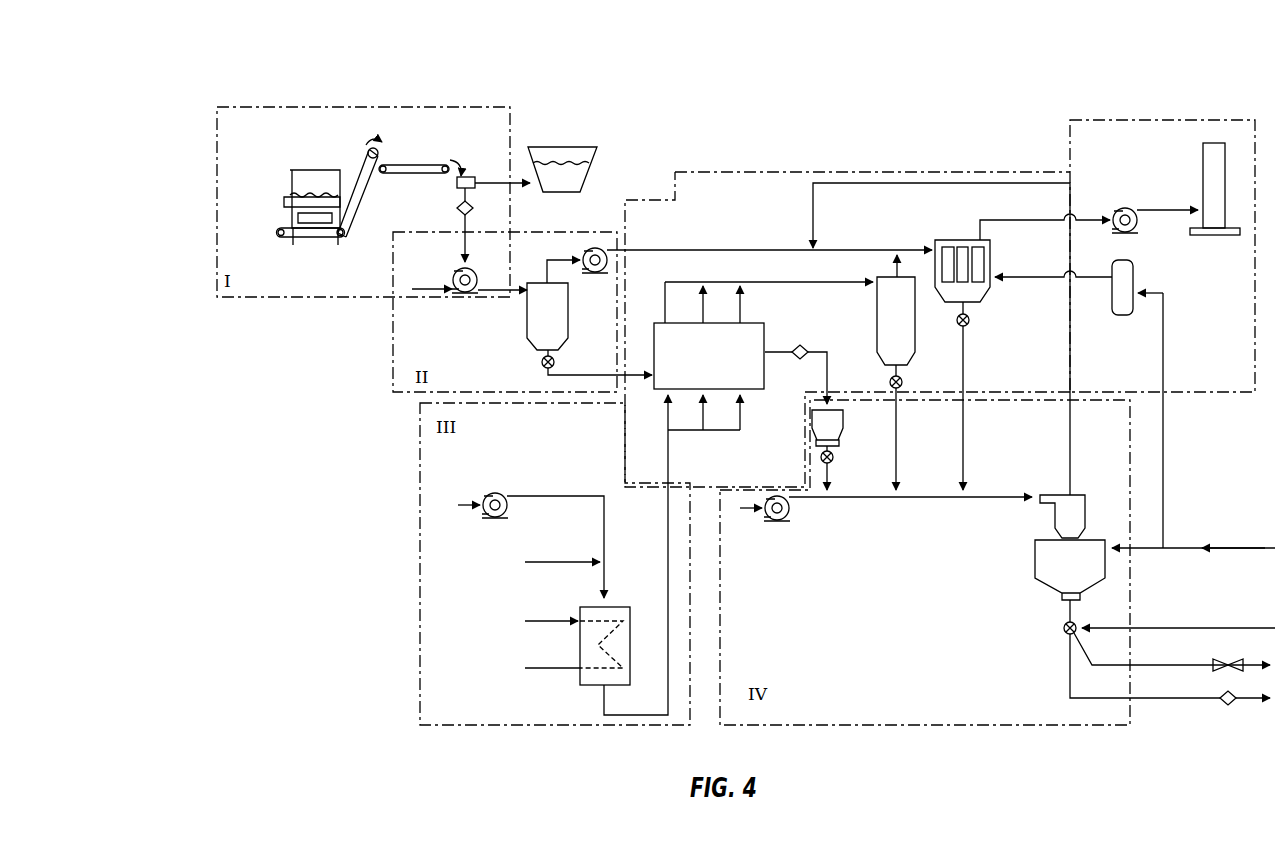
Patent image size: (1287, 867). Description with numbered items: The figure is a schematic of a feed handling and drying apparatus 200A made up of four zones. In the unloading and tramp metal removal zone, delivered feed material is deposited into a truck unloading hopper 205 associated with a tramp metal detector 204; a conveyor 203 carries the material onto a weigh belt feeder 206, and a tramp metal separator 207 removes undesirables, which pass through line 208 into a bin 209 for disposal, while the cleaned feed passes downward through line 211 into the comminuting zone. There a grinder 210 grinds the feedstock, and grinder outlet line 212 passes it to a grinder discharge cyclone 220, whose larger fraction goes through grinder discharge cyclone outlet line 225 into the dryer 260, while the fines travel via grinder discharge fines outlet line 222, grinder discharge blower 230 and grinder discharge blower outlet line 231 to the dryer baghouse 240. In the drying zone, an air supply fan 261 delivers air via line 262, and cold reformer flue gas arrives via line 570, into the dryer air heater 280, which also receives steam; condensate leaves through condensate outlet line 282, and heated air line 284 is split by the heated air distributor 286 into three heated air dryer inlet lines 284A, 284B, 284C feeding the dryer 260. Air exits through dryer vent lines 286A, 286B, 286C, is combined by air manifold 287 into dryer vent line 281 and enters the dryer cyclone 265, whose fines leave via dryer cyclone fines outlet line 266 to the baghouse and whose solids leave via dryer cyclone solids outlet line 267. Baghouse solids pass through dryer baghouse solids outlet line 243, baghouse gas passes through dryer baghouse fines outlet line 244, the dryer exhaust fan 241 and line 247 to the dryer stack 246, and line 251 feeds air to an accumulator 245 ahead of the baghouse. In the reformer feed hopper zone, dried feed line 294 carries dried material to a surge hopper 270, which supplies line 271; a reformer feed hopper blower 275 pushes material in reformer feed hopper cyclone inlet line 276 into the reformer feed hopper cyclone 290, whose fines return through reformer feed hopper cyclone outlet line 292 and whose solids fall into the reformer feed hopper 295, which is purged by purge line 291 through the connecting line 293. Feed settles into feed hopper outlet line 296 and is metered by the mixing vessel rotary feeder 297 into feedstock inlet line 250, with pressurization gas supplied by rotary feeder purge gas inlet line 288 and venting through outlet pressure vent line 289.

The feed handling and/or drying apparatus 200A is at (470, 46).
The conveyor 203 is at (310, 238).
The tramp metal detector 204 is at (292, 218).
The truck unloading hopper 205 is at (300, 170).
The weigh belt feeder 206 is at (424, 165).
The tramp metal separator 207 is at (457, 183).
The line 208 is at (492, 183).
The bin 209 is at (597, 160).
The grinder 210 is at (457, 268).
The line 211 is at (470, 250).
The grinder outlet line 212 is at (502, 292).
The grinder discharge cyclone 220 is at (528, 325).
The grinder discharge fines outlet line 222 is at (553, 262).
The grinder discharge cyclone outlet line 225 is at (580, 375).
The grinder discharge blower 230 is at (598, 248).
The grinder discharge blower outlet line 231 is at (715, 250).
The dryer baghouse 240 is at (985, 298).
The dryer exhaust fan 241 is at (1120, 208).
The dryer baghouse solids outlet line 243 is at (965, 440).
The dryer baghouse fines outlet line 244 is at (1035, 220).
The accumulator 245 is at (1135, 280).
The dryer stack 246 is at (1203, 158).
The line 247 is at (1165, 210).
The feedstock inlet line 250 is at (1140, 698).
The line 251 is at (1165, 448).
The dryer 260 is at (709, 356).
The air supply fan 261 is at (490, 518).
The line 262 is at (540, 496).
The dryer cyclone 265 is at (917, 330).
The dryer cyclone fines outlet line 266 is at (893, 258).
The dryer cyclone solids outlet line 267 is at (897, 440).
The surge hopper 270 is at (843, 425).
The line 271 is at (834, 457).
The reformer feed hopper blower 275 is at (790, 515).
The reformer feed hopper cyclone inlet line 276 is at (920, 498).
The dryer air heater 280 is at (612, 607).
The dryer vent line 281 is at (805, 284).
The condensate outlet line 282 is at (560, 668).
The heated air line 284 is at (640, 715).
The heated air dryer inlet line 284A is at (666, 420).
The heated air dryer inlet line 284B is at (703, 440).
The heated air dryer inlet line 284C is at (742, 418).
The heated air distributor 286 is at (668, 445).
The dryer vent line 286A is at (665, 282).
The dryer vent line 286B is at (703, 300).
The dryer vent line 286C is at (742, 305).
The air manifold 287 is at (728, 282).
The rotary feeder purge gas inlet line 288 is at (1140, 628).
The outlet pressure vent line 289 is at (1140, 665).
The reformer feed hopper cyclone 290 is at (1050, 513).
The purge line 291 is at (1225, 548).
The reformer feed hopper cyclone outlet line 292 is at (1072, 347).
The line 293 is at (1145, 548).
The dried feed line 294 is at (810, 352).
The reformer feed hopper 295 is at (1070, 570).
The feed hopper outlet line 296 is at (1068, 610).
The mixing vessel rotary feeder 297 is at (1066, 635).
The line 570 is at (560, 562).